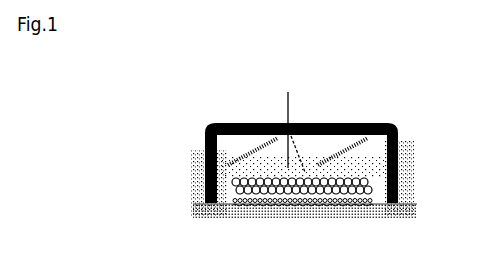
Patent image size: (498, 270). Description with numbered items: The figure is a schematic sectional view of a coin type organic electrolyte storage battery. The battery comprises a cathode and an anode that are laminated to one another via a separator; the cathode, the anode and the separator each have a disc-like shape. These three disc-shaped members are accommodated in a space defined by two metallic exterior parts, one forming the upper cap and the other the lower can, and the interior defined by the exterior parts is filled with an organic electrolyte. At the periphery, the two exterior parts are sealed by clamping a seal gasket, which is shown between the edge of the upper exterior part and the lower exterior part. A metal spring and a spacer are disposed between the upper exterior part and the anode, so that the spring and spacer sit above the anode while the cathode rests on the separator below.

The element exterior part is at (205, 138).
The seal gasket is at (399, 157).
The element anode is at (275, 176).
The metal spring is at (245, 152).
The element spacer is at (288, 92).
The element cathode is at (268, 200).
The element separator is at (333, 202).